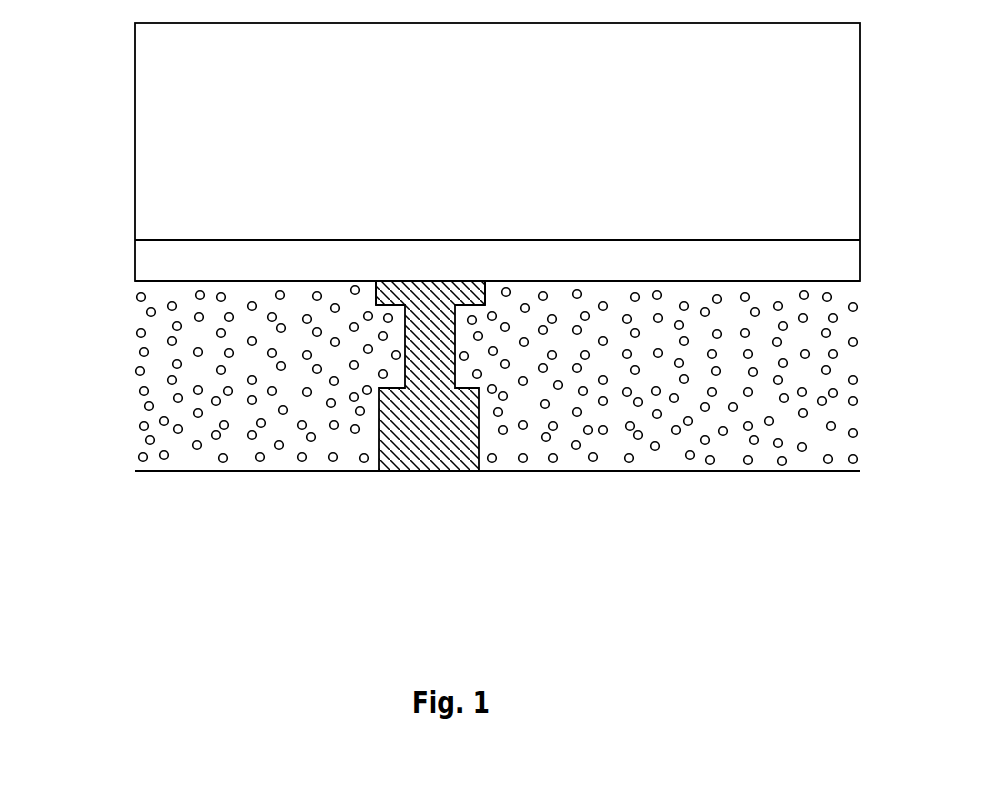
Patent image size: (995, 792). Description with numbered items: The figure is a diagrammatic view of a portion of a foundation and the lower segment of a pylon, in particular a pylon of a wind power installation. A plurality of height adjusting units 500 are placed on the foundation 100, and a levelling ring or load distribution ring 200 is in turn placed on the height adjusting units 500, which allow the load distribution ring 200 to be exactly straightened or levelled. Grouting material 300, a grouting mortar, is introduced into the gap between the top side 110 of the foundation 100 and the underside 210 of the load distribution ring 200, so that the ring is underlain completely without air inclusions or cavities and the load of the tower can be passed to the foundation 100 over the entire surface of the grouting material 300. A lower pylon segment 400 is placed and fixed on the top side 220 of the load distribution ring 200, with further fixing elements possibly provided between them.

The foundation 100 is at (430, 397).
The top side of the foundation 110 is at (572, 472).
The load distribution ring 200 is at (537, 257).
The underside of the load distribution ring 210 is at (705, 280).
The top side of the load distribution ring 220 is at (665, 239).
The grouting material 300 is at (138, 403).
The lower pylon segment 400 is at (138, 77).
The height adjusting unit 500 is at (393, 280).